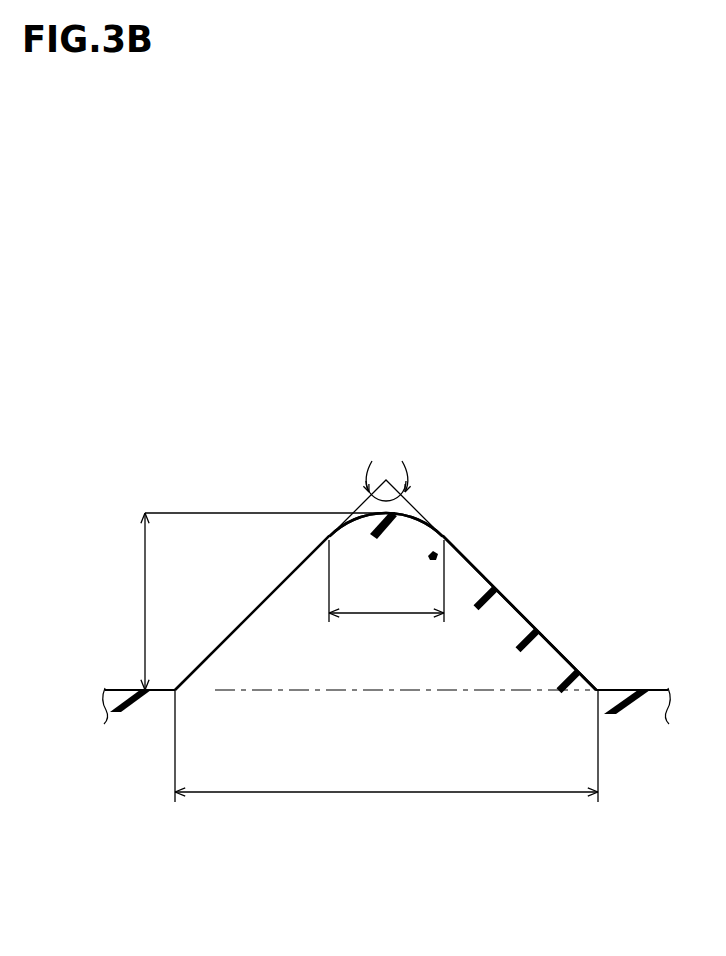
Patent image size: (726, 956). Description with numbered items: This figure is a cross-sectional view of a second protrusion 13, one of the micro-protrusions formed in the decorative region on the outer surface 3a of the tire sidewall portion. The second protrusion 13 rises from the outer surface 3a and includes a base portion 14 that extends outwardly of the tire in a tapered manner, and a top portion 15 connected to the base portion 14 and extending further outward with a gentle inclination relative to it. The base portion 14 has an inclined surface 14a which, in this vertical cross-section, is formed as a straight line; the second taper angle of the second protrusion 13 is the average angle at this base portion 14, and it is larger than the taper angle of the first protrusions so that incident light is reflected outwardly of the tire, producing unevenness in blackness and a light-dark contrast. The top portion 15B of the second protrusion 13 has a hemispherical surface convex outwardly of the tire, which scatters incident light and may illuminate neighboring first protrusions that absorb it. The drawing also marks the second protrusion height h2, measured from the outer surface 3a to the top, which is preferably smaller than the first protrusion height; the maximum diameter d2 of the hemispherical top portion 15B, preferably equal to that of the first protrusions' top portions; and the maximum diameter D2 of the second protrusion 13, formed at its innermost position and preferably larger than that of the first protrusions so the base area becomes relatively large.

The second protrusion 13 is at (438, 458).
The base portion 14 is at (548, 641).
The inclined surface 14a is at (523, 598).
The top portion 15 is at (394, 514).
The top portion of second protrusion 15B is at (355, 503).
The outer surface of sidewall portion 3a is at (615, 690).
The second protrusion height h2 is at (247, 601).
The maximum diameter of second protrusion D2 is at (386, 760).
The maximum diameter of top portion d2 is at (387, 613).